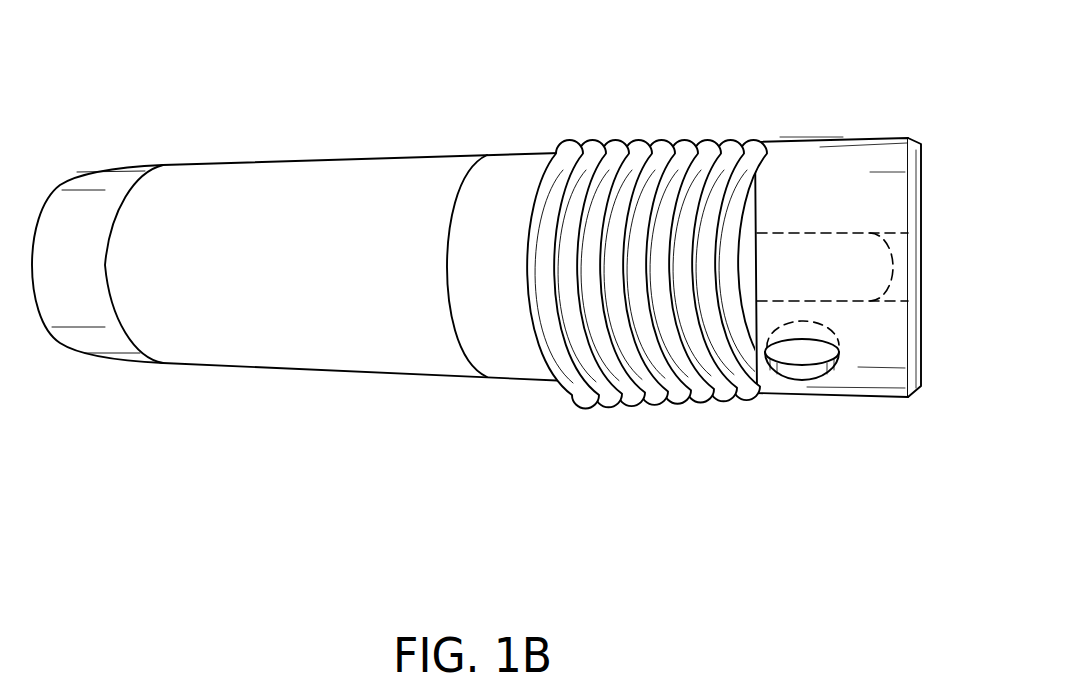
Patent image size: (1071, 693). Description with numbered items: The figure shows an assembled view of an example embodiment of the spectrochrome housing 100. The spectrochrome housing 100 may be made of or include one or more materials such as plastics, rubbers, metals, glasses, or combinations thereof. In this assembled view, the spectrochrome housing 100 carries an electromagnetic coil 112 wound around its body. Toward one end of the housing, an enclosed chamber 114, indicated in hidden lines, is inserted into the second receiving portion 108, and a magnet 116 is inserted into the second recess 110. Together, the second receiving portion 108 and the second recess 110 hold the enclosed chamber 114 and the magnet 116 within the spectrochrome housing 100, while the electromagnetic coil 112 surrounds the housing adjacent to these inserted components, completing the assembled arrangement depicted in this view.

The spectrochrome housing 100 is at (490, 290).
The second receiving portion 108 is at (915, 280).
The second recess 110 is at (815, 365).
The electromagnetic coil 112 is at (640, 395).
The enclosed chamber 114 is at (770, 250).
The magnet 116 is at (800, 352).